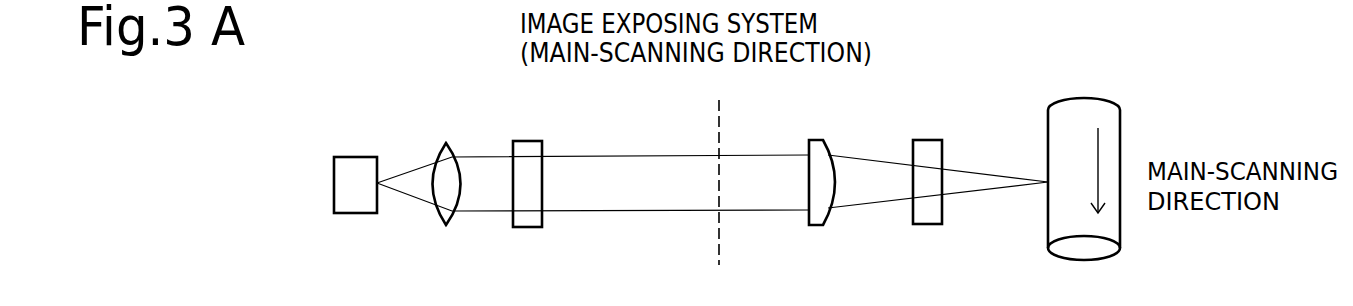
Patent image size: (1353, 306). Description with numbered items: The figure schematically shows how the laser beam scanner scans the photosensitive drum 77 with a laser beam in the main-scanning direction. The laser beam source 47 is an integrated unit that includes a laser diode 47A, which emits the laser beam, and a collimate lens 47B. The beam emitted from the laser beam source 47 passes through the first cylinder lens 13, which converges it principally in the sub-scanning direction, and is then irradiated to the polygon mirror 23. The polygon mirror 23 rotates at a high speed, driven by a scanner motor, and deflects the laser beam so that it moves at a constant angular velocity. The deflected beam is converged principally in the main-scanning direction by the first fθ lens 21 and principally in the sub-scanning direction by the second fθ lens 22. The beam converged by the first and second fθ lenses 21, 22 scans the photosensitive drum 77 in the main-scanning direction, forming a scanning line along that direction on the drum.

The laser beam source 47 is at (497, 92).
The laser diode 47A is at (358, 157).
The collimate lens 47B is at (445, 142).
The first cylinder lens 13 is at (523, 140).
The polygon mirror 23 is at (719, 114).
The first fθ lens 21 is at (820, 138).
The second fθ lens 22 is at (935, 138).
The photosensitive drum 77 is at (1082, 98).